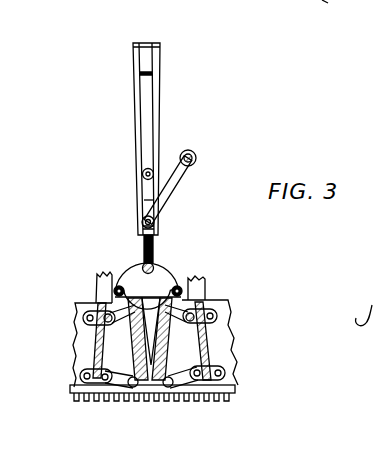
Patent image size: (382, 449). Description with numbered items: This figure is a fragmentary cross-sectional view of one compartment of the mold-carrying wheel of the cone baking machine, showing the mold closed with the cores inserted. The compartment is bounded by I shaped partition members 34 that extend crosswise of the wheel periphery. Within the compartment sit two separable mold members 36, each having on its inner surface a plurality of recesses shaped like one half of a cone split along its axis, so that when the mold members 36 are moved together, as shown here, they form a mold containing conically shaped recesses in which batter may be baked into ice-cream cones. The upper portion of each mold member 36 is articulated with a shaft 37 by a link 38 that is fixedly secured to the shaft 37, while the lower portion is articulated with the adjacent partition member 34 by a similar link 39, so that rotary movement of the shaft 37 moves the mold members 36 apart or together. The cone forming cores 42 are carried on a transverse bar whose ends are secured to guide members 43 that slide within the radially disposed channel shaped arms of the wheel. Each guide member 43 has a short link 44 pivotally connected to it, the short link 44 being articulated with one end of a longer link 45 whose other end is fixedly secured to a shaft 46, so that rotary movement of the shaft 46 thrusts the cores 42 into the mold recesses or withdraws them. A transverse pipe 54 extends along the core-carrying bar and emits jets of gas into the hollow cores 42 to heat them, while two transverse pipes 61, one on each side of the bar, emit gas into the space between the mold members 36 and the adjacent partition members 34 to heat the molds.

The guide member 43 is at (143, 112).
The short link 44 is at (147, 203).
The longer link 45 is at (172, 189).
The shaft 46 is at (197, 156).
The transverse pipe 54 is at (158, 267).
The transverse pipe 61 is at (117, 270).
The link 38 is at (113, 335).
The mold member 36 is at (140, 356).
The shaft 37 is at (205, 300).
The partition member 34 is at (212, 328).
The core 42 is at (85, 372).
The link 39 is at (172, 402).